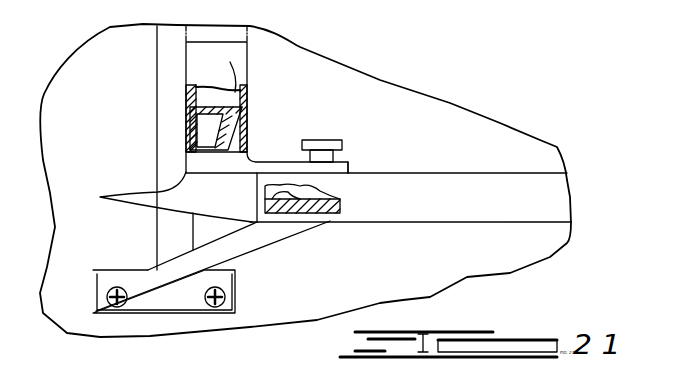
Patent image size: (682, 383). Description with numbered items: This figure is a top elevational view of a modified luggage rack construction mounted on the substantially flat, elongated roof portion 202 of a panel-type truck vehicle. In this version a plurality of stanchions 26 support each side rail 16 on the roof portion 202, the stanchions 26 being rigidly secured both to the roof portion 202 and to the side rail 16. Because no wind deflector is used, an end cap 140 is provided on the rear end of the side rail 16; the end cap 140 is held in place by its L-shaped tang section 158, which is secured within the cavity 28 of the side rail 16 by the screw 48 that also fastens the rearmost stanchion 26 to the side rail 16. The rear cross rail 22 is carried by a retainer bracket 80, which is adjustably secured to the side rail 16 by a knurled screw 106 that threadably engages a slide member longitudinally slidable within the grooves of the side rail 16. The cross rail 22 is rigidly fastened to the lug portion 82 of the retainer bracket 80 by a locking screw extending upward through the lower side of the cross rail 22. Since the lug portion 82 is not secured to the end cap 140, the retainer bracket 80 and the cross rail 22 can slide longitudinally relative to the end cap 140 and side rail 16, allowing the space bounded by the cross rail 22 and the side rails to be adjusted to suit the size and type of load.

The side rail 16 is at (537, 227).
The rear cross rail 22 is at (249, 86).
The stanchion 26 is at (260, 256).
The cavity 28 is at (376, 160).
The screw 48 is at (302, 187).
The retainer bracket 80 is at (353, 163).
The lug portion 82 is at (214, 69).
The knurled screw 106 is at (317, 139).
The end cap 140 is at (137, 207).
The L-shaped tang section 158 is at (403, 194).
The roof portion 202 is at (275, 302).